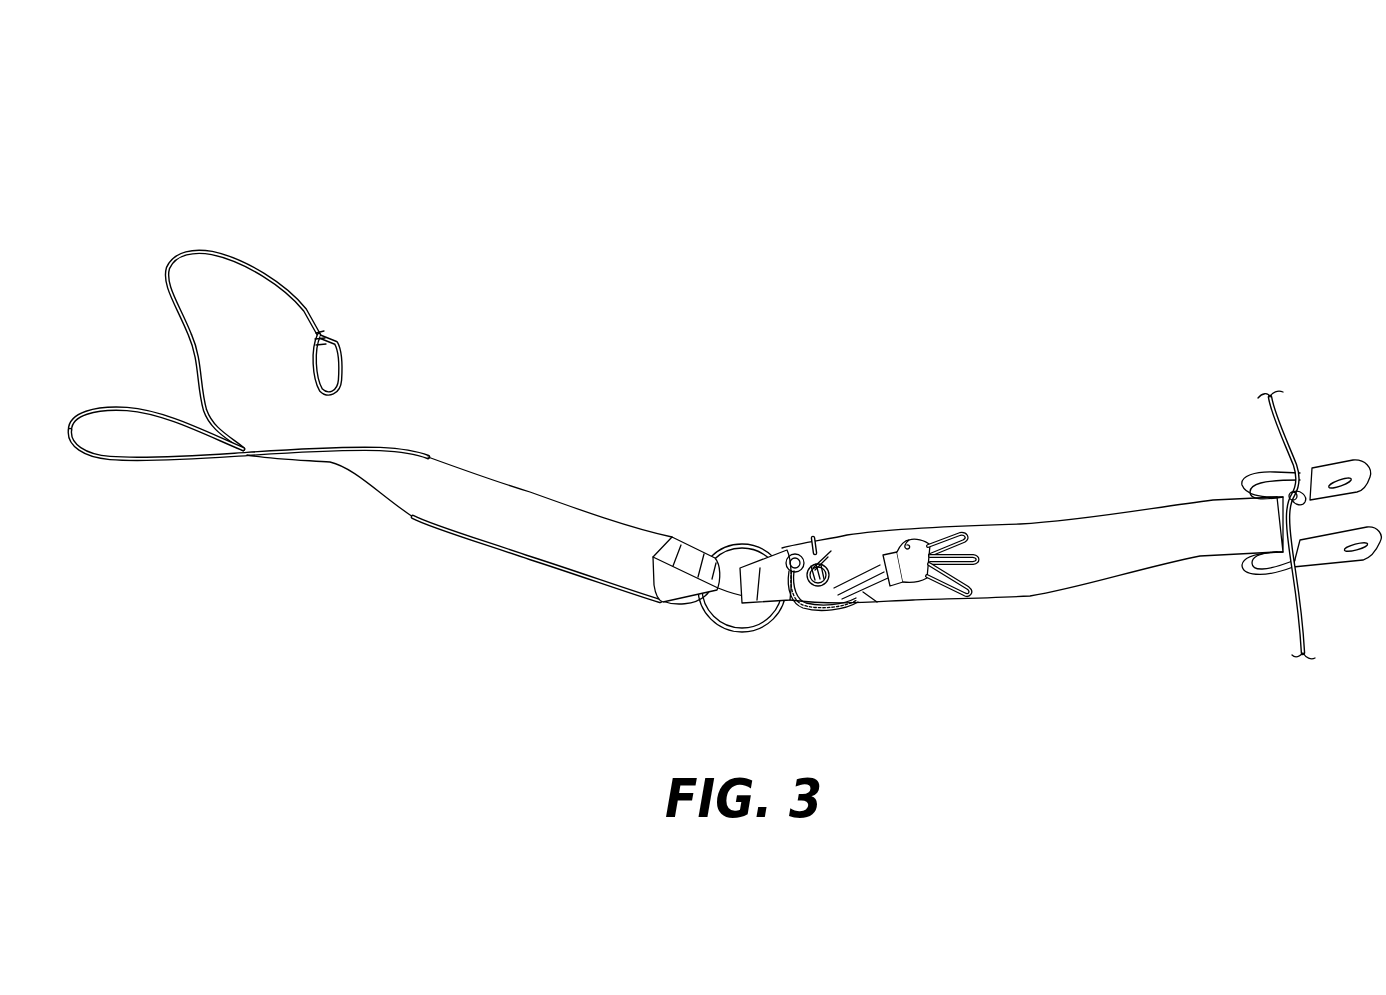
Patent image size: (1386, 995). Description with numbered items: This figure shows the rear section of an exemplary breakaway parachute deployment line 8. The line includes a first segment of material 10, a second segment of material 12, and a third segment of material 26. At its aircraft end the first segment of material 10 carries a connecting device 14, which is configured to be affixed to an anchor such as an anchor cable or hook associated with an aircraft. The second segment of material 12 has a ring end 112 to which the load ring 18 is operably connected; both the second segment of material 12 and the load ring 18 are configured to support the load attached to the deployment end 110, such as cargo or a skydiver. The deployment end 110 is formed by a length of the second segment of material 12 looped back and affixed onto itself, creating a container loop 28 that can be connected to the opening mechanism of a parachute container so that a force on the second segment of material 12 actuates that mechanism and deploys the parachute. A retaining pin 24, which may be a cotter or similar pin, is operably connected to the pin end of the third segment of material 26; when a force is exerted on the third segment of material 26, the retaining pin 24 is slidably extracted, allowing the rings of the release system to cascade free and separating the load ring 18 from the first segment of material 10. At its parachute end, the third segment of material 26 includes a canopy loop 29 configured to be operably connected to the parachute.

The parachute deployment line 8 is at (163, 94).
The first segment of material 10 is at (1080, 518).
The second segment of material 12 is at (540, 493).
The connecting device 14 is at (1337, 457).
The load ring 18 is at (740, 543).
The retaining pin 24 is at (803, 550).
The third segment of material 26 is at (250, 263).
The container loop 28 is at (157, 458).
The canopy loop 29 is at (340, 362).
The deployment end 110 is at (120, 306).
The ring end 112 is at (697, 555).